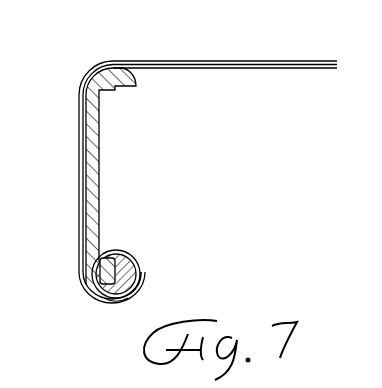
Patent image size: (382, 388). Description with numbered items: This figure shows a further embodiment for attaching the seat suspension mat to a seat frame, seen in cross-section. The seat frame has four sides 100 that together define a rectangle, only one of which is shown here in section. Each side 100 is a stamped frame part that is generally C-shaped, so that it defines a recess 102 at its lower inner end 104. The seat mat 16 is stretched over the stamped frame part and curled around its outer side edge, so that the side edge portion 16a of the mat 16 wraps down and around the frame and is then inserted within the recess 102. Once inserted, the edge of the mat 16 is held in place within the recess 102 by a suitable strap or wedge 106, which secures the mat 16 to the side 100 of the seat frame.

The seat mat 16 is at (218, 47).
The side 100 is at (100, 177).
The recess 102 is at (102, 258).
The lower inner end 104 is at (117, 292).
The strap or wedge 106 is at (128, 264).
The side edge portion 16a is at (132, 276).